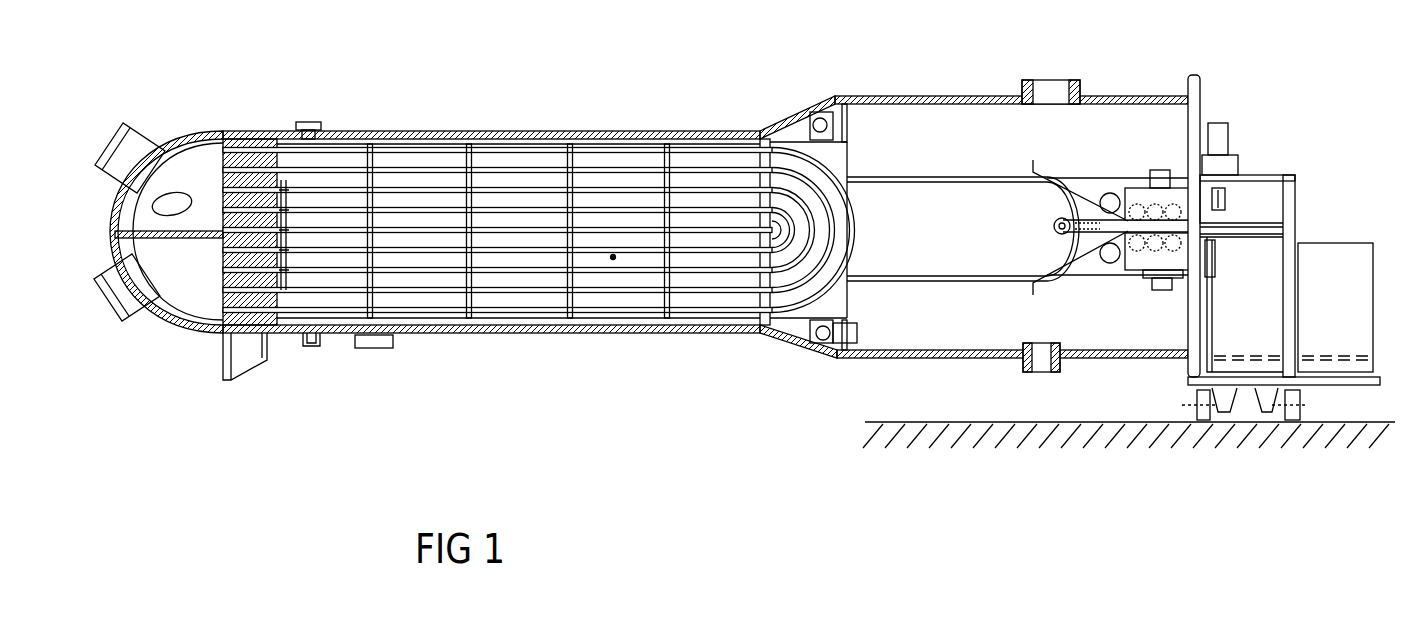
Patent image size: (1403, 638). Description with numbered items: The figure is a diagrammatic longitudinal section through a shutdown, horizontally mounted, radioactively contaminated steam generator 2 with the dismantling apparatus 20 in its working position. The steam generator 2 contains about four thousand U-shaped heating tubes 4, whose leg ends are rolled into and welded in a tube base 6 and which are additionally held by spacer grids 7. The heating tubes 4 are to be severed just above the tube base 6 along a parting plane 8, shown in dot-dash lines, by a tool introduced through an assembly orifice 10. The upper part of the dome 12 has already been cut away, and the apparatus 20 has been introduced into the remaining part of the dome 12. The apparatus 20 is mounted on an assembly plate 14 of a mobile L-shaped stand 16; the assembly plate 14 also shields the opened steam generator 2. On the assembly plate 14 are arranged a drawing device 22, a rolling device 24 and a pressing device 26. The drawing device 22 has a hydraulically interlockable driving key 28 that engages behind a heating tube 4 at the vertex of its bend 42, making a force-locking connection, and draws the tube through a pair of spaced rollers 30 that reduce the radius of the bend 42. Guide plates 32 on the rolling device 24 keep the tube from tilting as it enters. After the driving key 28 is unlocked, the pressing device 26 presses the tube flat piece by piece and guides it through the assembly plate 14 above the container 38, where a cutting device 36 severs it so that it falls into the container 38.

The steam generator 2 is at (417, 130).
The heating tubes 4 is at (703, 180).
The tube base 6 is at (267, 315).
The spacer grids 7 is at (478, 162).
The parting plane 8 is at (280, 216).
The assembly orifice 10 is at (307, 121).
The dome 12 is at (957, 96).
The assembly plate 14 is at (1197, 107).
The mobile L-shaped stand 16 is at (1328, 492).
The apparatus 20 is at (1178, 334).
The drawing device 22 is at (1088, 232).
The rolling device 24 is at (1092, 175).
The pressing device 26 is at (1183, 195).
The driving key 28 is at (1057, 221).
The pair of rollers 30 is at (1113, 192).
The guide plates 32 is at (1073, 273).
The cutting device 36 is at (1263, 200).
The container 38 is at (1342, 243).
The bend 42 is at (1055, 262).